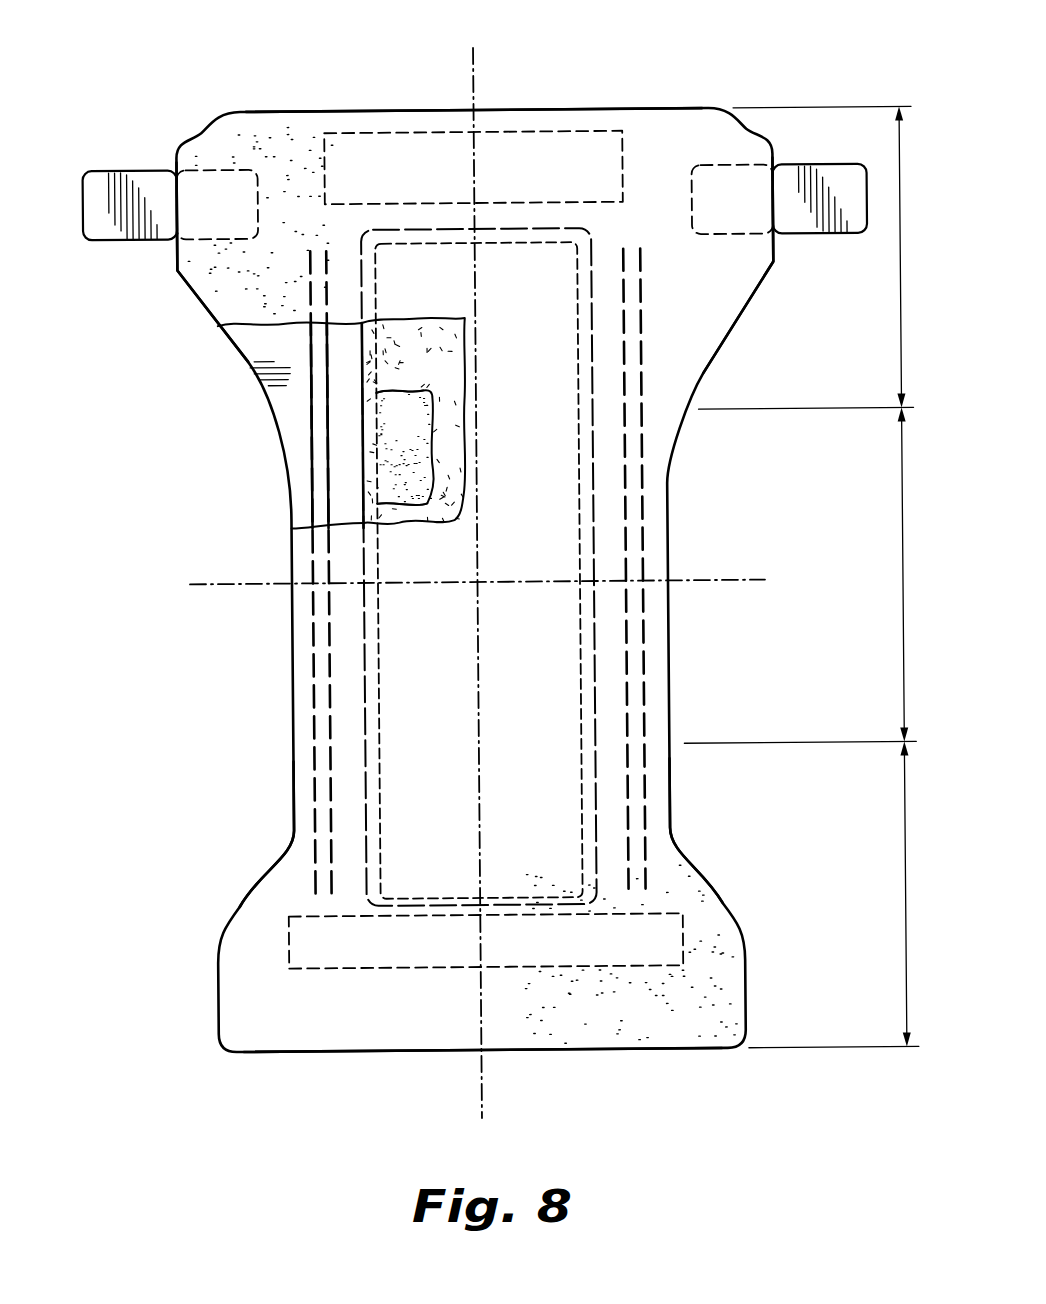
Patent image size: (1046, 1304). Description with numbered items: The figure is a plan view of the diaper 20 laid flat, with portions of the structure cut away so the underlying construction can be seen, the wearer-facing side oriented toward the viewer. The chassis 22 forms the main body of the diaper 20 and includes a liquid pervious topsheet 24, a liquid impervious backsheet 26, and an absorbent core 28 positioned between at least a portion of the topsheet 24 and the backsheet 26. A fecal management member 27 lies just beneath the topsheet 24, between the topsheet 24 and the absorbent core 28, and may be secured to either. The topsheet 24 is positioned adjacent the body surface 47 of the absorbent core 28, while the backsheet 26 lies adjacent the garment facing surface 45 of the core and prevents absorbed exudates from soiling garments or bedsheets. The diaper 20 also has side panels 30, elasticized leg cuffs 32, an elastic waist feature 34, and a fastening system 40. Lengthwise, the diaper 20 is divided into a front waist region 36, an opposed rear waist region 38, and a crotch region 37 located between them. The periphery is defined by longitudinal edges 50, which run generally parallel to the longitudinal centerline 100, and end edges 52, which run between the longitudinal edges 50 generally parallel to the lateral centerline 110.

The diaper 20 is at (783, 83).
The chassis 22 is at (555, 663).
The topsheet 24 is at (392, 739).
The backsheet 26 is at (262, 354).
The fecal management member 27 is at (444, 381).
The absorbent core 28 is at (422, 431).
The side panels 30 is at (262, 158).
The elasticized leg cuffs 32 is at (313, 655).
The elastic waist feature 34 is at (520, 160).
The front waist region 36 is at (850, 894).
The crotch region 37 is at (817, 575).
The rear waist region 38 is at (822, 257).
The fastening system 40 is at (145, 192).
The garment facing surface 45 is at (397, 485).
The body surface 47 is at (393, 459).
The longitudinal edges 50 is at (292, 777).
The end edges 52 is at (350, 110).
The longitudinal centerline 100 is at (483, 1078).
The lateral centerline 110 is at (690, 582).